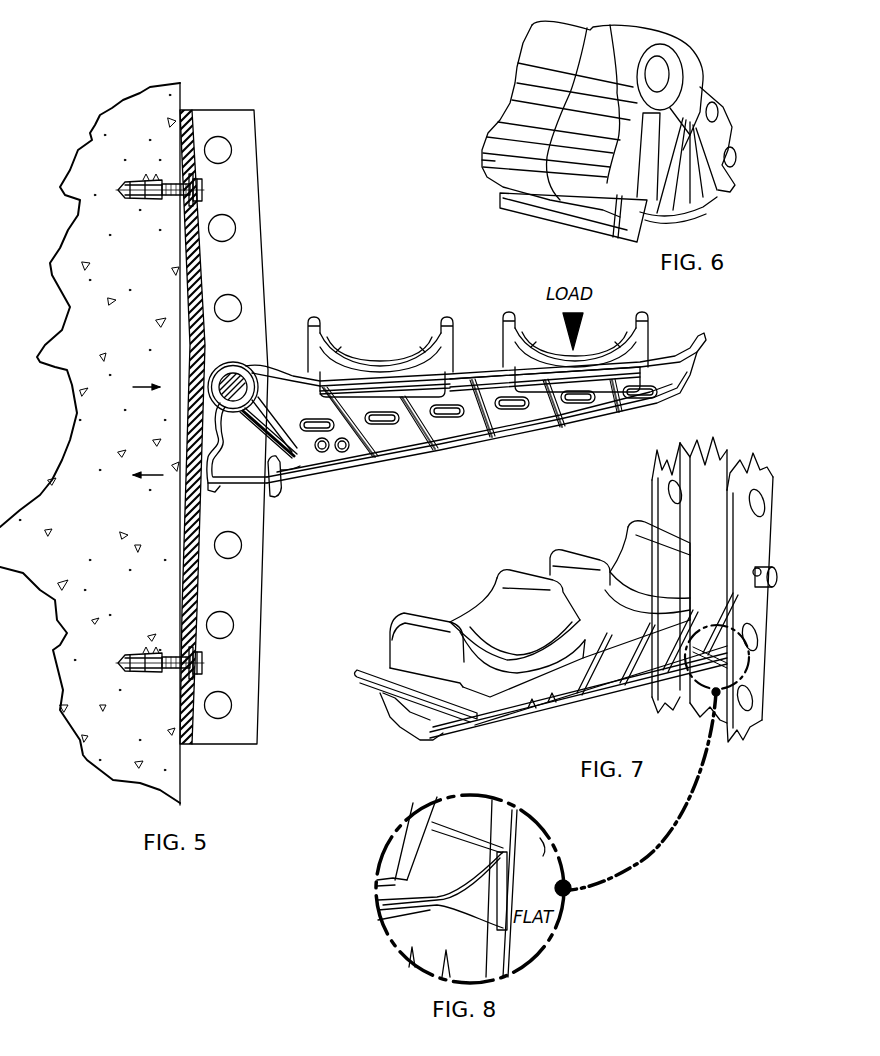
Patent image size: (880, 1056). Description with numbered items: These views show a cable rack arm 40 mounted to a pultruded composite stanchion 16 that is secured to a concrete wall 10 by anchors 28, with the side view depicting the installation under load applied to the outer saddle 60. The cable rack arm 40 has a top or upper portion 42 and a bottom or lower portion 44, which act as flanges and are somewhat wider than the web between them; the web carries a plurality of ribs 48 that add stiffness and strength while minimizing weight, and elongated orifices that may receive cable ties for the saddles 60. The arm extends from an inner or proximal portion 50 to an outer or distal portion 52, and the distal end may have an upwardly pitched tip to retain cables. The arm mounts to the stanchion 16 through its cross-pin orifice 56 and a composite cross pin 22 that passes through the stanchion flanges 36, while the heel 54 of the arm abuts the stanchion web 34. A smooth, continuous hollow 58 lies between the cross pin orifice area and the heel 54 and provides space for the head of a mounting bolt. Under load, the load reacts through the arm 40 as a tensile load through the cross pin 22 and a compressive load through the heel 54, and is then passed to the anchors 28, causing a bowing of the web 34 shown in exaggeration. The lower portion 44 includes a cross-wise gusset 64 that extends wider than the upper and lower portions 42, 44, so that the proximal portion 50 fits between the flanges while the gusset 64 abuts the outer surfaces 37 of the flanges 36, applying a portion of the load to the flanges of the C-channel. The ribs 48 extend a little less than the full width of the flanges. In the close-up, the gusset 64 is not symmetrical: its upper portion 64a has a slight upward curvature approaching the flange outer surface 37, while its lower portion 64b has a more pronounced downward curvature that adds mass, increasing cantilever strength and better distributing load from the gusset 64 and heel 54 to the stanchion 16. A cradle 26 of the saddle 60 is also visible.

In FIG. 5, the concrete wall 10 is at (92, 537).
In FIG. 7, the stanchion 16 is at (737, 589).
In FIG. 5, the cross pin 22 is at (236, 372).
In FIG. 7, the cross pin 22 is at (778, 580).
In FIG. 7, the cradle 26 is at (533, 572).
In FIG. 5, the anchors 28 is at (137, 203).
In FIG. 5, the stanchion web 34 is at (186, 555).
In FIG. 5, the stanchion flanges 36 is at (240, 597).
In FIG. 7, the stanchion flanges 36 is at (755, 617).
In FIG. 7, the flange outer surfaces 37 is at (740, 625).
In FIG. 8, the flange outer surfaces 37 is at (505, 827).
In FIG. 5, the cable rack arm 40 is at (456, 398).
In FIG. 6, the cable rack arm 40 is at (602, 141).
In FIG. 7, the cable rack arm 40 is at (544, 645).
In FIG. 6, the upper portion 42 is at (700, 78).
In FIG. 6, the lower portion 44 is at (690, 222).
In FIG. 7, the lower portion 44 is at (635, 695).
In FIG. 6, the ribs 48 is at (713, 205).
In FIG. 7, the ribs 48 is at (570, 710).
In FIG. 6, the proximal portion 50 is at (602, 141).
In FIG. 7, the distal portion 52 is at (400, 744).
In FIG. 5, the heel 54 is at (207, 493).
In FIG. 6, the heel 54 is at (477, 165).
In FIG. 6, the cross-pin orifice 56 is at (655, 73).
In FIG. 6, the hollow 58 is at (583, 112).
In FIG. 5, the saddles 60 is at (452, 320).
In FIG. 6, the saddles 60 is at (735, 150).
In FIG. 5, the gusset 64 is at (290, 487).
In FIG. 6, the gusset 64 is at (617, 240).
In FIG. 8, the gusset 64 is at (442, 874).
In FIG. 8, the upper portion of gusset 64a is at (463, 890).
In FIG. 8, the lower portion of gusset 64b is at (455, 912).